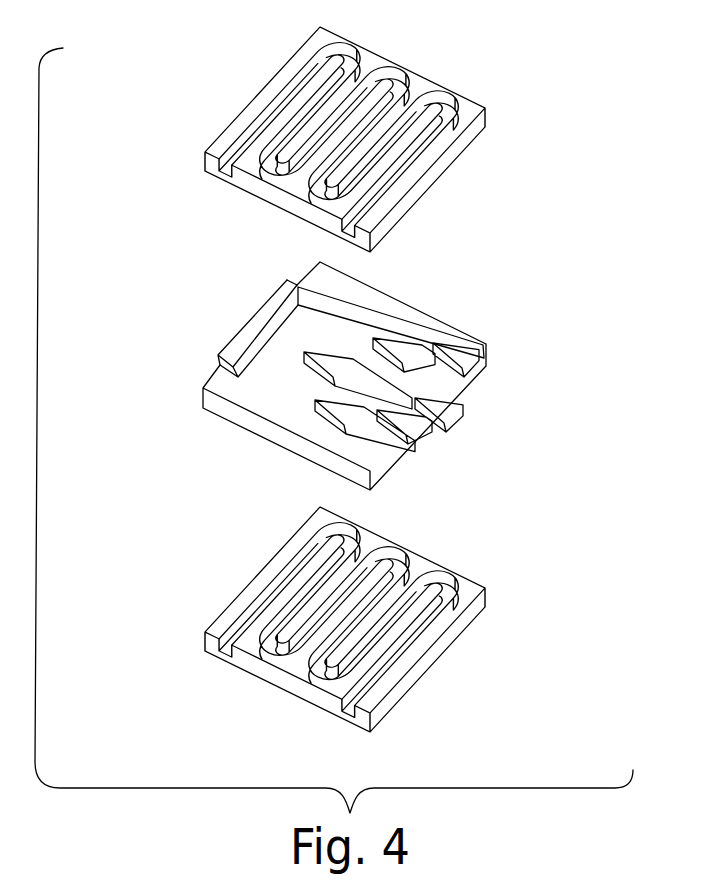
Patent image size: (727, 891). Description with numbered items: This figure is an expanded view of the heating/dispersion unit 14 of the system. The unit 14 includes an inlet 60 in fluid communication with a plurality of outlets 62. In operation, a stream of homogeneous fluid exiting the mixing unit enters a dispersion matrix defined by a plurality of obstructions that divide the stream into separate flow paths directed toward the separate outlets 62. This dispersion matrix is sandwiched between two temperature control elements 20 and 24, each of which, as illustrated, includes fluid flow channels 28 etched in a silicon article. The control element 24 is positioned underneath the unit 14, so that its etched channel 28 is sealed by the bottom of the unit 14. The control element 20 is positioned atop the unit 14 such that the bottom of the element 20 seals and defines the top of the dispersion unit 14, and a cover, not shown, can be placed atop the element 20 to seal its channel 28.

The heating/dispersion unit 14 is at (304, 376).
The temperature control element 20 is at (283, 77).
The temperature control element 24 is at (243, 590).
The fluid flow channel 28 is at (224, 172).
The inlet 60 is at (258, 312).
The outlets 62 is at (447, 400).